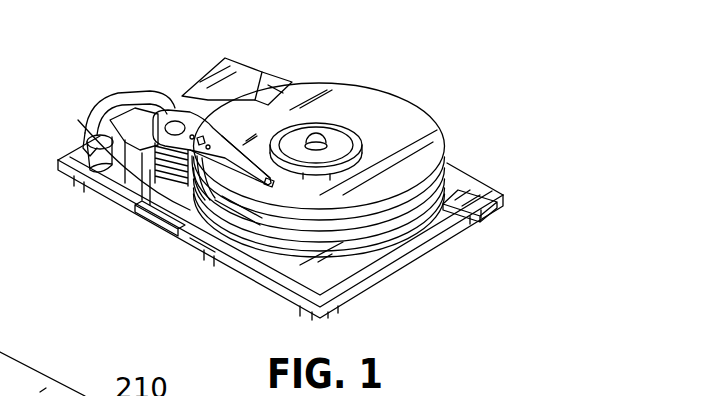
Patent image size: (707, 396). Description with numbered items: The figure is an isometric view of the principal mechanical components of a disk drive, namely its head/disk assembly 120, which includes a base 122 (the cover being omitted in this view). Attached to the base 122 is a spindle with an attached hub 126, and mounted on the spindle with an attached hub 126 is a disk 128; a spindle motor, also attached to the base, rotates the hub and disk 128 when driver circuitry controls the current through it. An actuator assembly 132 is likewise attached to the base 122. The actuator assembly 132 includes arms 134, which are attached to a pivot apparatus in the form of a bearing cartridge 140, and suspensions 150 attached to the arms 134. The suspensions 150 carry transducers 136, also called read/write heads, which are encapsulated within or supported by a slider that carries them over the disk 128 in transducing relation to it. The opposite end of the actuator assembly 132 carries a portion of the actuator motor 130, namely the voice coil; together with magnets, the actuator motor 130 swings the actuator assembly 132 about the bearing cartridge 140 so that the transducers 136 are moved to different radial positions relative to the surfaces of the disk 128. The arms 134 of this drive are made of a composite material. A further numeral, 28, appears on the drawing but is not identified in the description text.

The head/disk assembly 120 is at (412, 82).
The base 122 is at (335, 290).
The spindle with an attached hub 126 is at (321, 135).
The disk 128 is at (423, 128).
The actuator motor 130 is at (115, 99).
The actuator assembly 132 is at (147, 180).
The arms 134 is at (218, 128).
The transducers 136 is at (265, 185).
The bearing cartridge 140 is at (177, 116).
The suspensions 150 is at (188, 245).
The crash stop 28 is at (110, 132).